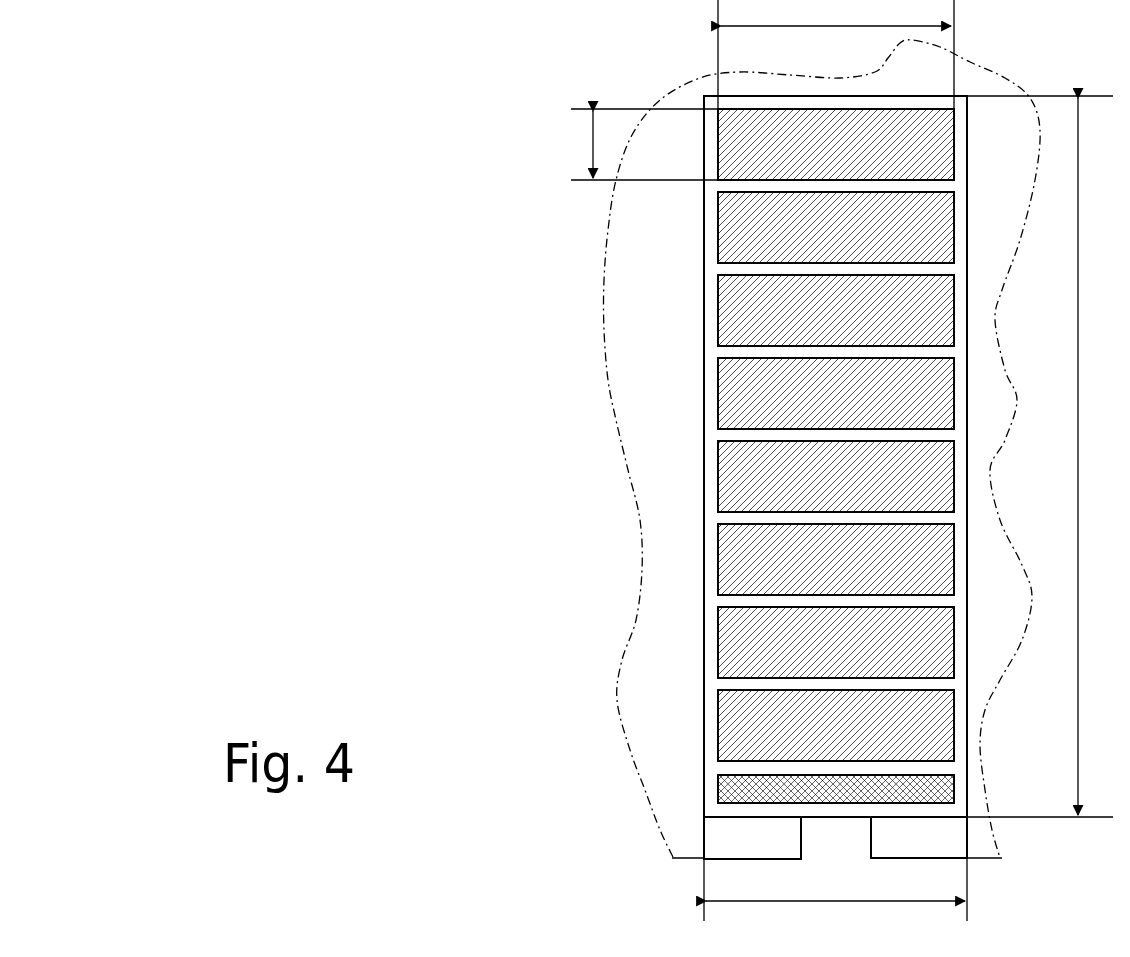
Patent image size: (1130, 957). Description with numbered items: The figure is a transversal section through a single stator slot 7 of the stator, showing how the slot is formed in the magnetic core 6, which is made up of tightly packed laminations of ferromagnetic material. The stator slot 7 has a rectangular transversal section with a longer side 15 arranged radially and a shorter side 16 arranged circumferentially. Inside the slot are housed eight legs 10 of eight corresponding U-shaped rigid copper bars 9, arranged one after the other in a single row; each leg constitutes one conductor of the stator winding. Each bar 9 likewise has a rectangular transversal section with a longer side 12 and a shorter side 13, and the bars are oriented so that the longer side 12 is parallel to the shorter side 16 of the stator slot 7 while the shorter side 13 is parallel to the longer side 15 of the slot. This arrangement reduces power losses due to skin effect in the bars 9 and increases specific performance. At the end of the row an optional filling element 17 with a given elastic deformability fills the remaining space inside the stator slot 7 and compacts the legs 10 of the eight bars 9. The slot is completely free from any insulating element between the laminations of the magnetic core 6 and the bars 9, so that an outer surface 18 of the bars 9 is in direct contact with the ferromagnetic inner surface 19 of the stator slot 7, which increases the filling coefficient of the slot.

The magnetic core 6 is at (576, 486).
The stator slot 7 is at (700, 268).
The U-shaped rigid bar 9 is at (688, 393).
The leg 10 is at (827, 562).
The longer side 12 is at (836, 54).
The shorter side 13 is at (637, 144).
The longer side 15 is at (1041, 456).
The shorter side 16 is at (835, 894).
The filling element 17 is at (817, 790).
The outer surface 18 is at (715, 317).
The inner surface 19 is at (709, 685).